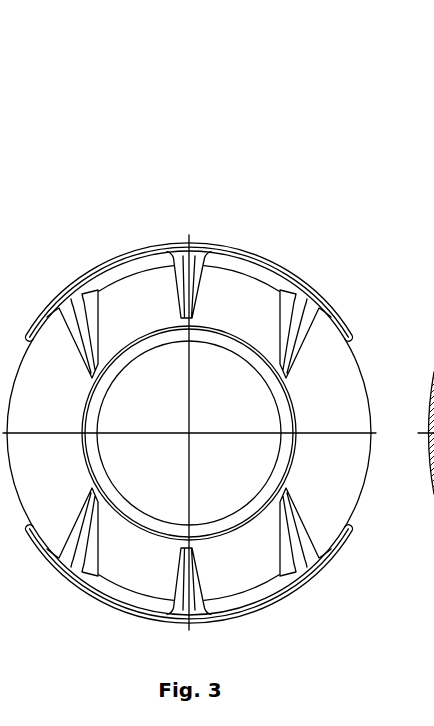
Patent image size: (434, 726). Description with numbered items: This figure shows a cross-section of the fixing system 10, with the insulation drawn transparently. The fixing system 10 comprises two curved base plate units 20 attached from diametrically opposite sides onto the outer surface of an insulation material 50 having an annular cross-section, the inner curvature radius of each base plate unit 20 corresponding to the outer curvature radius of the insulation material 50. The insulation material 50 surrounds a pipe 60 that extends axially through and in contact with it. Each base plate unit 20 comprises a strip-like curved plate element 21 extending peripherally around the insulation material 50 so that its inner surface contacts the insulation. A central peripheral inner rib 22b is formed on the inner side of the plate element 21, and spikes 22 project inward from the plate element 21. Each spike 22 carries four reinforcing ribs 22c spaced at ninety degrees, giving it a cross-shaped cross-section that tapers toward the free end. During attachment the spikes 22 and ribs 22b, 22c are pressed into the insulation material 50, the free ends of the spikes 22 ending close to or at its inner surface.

The fixing system 10 is at (208, 158).
The base plate unit 20 is at (339, 312).
The plate element 21 is at (290, 263).
The spike 22 is at (290, 347).
The peripheral inner rib 22b is at (224, 270).
The reinforcing rib 22c is at (98, 303).
The insulation material 50 is at (339, 474).
The pipe 60 is at (272, 474).